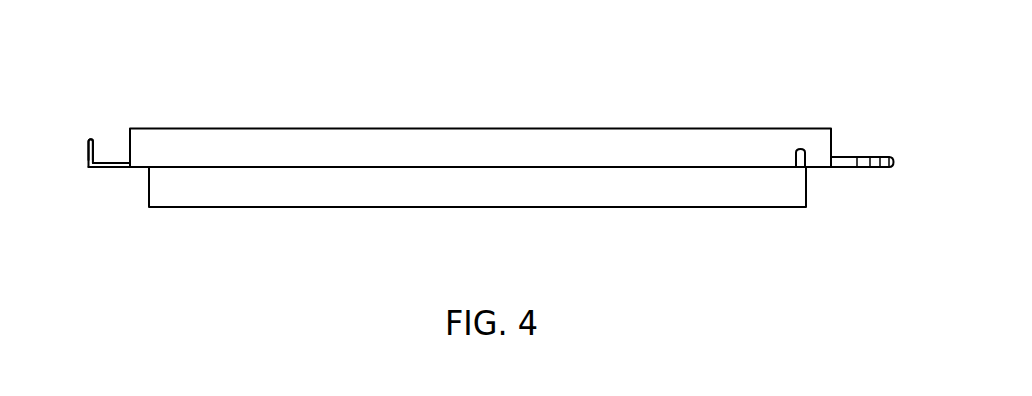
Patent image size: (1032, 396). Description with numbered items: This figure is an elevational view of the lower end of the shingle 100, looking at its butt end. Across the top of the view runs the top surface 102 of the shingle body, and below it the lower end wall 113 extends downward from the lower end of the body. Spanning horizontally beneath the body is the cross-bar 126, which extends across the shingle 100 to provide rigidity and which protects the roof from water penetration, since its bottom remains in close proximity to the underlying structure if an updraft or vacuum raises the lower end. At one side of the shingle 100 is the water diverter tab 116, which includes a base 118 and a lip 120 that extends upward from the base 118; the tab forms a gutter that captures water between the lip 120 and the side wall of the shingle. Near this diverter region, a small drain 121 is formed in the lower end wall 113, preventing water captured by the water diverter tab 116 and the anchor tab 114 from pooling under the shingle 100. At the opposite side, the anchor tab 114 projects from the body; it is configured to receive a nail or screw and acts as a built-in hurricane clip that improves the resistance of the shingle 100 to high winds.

The shingle 100 is at (568, 75).
The top surface 102 is at (338, 128).
The lower end wall 113 is at (433, 142).
The anchor tab 114 is at (892, 158).
The water diverter tab 116 is at (108, 110).
The base 118 is at (117, 163).
The lip 120 is at (87, 146).
The drain 121 is at (795, 152).
The cross-bar 126 is at (593, 185).